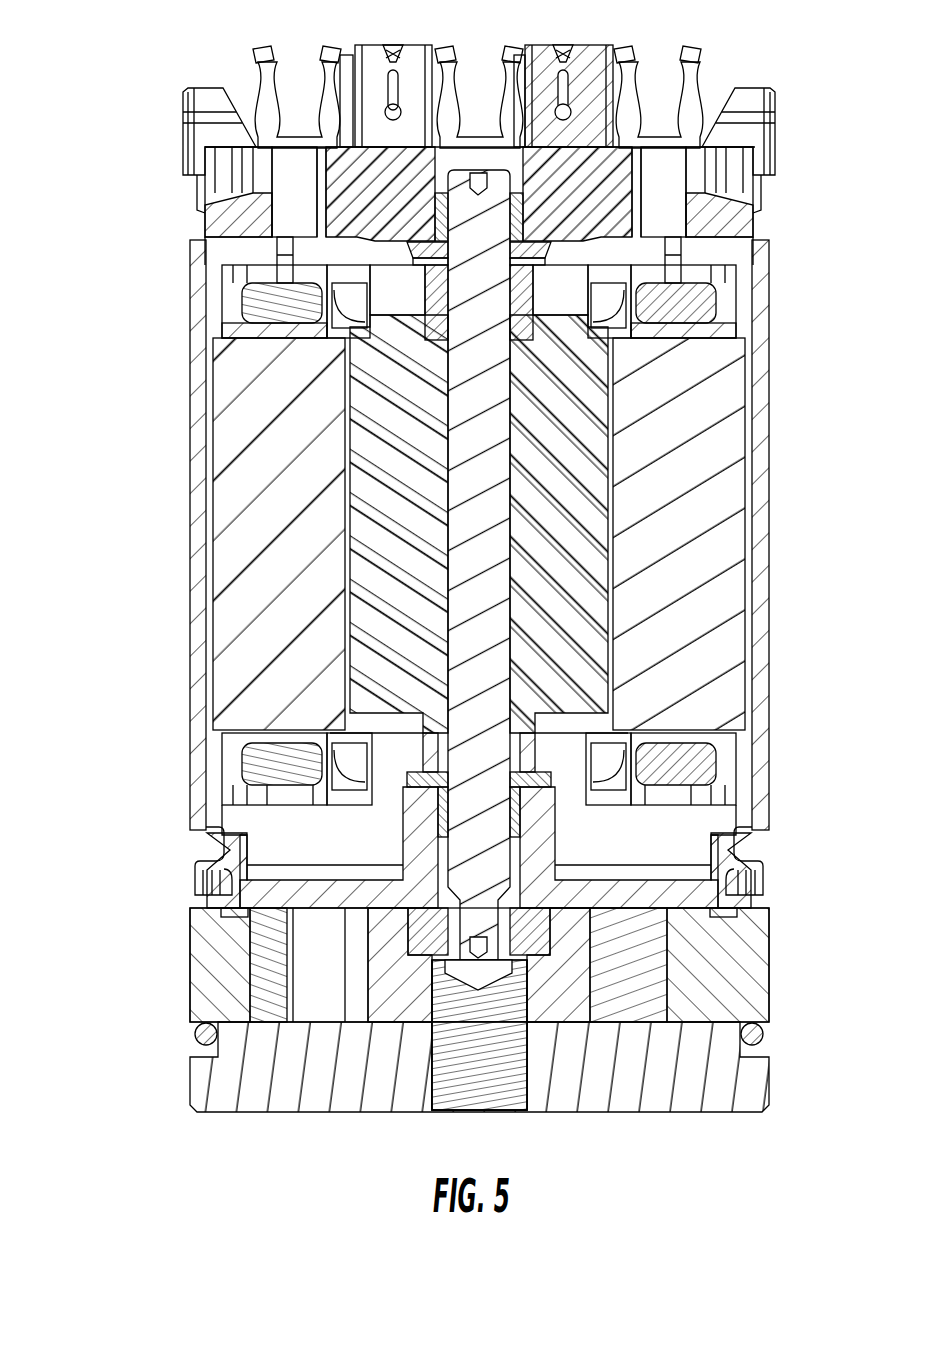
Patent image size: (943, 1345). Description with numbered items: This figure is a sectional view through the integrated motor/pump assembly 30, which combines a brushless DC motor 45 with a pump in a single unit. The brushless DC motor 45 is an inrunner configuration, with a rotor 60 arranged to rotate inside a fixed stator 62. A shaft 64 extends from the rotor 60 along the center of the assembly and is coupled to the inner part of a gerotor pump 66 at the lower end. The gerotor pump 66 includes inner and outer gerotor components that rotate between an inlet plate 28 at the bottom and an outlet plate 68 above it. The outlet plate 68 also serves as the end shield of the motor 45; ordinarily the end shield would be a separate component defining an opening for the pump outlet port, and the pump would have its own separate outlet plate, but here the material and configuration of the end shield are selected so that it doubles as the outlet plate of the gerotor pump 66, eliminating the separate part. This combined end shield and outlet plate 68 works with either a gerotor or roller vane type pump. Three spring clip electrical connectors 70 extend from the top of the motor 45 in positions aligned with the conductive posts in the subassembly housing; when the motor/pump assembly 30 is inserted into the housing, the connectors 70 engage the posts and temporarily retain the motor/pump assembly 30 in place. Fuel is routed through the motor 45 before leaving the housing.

The inlet plate 28 is at (297, 1070).
The motor/pump assembly 30 is at (118, 582).
The brushless DC motor 45 is at (772, 327).
The rotor 60 is at (576, 541).
The stator 62 is at (290, 680).
The shaft 64 is at (466, 895).
The gerotor pump 66 is at (393, 985).
The outlet plate 68 is at (232, 853).
The spring clip electrical connectors 70 is at (260, 90).